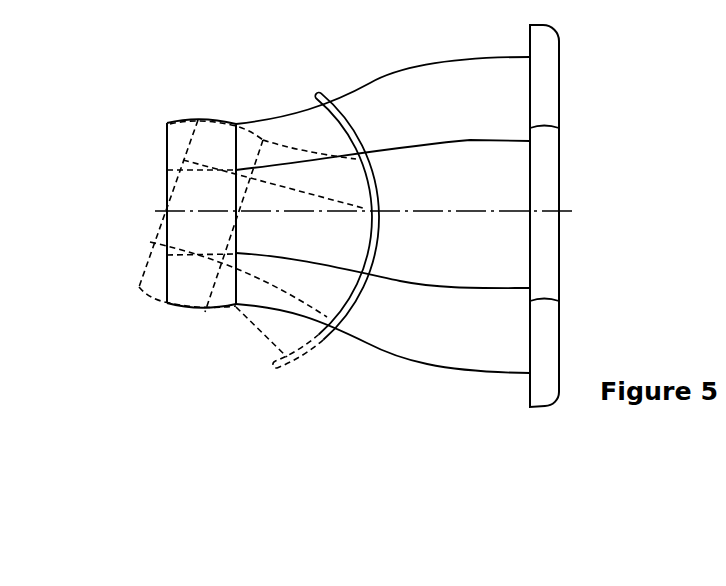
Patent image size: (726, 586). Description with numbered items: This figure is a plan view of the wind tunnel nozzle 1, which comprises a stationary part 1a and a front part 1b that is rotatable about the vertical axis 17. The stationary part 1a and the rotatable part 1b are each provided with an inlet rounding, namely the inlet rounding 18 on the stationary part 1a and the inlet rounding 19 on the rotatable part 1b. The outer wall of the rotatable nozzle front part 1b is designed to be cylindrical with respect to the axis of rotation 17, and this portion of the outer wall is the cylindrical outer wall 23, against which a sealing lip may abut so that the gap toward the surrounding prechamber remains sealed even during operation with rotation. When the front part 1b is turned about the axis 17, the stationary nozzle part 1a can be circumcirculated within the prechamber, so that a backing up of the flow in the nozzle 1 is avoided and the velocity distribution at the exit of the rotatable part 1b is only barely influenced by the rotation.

The nozzle 1 is at (350, 405).
The stationary part 1a is at (377, 322).
The rotatable part 1b is at (218, 295).
The vertical axis 17 is at (205, 217).
The inlet rounding 18 is at (547, 60).
The inlet rounding 19 is at (331, 93).
The cylindrical outer wall 23 is at (195, 121).